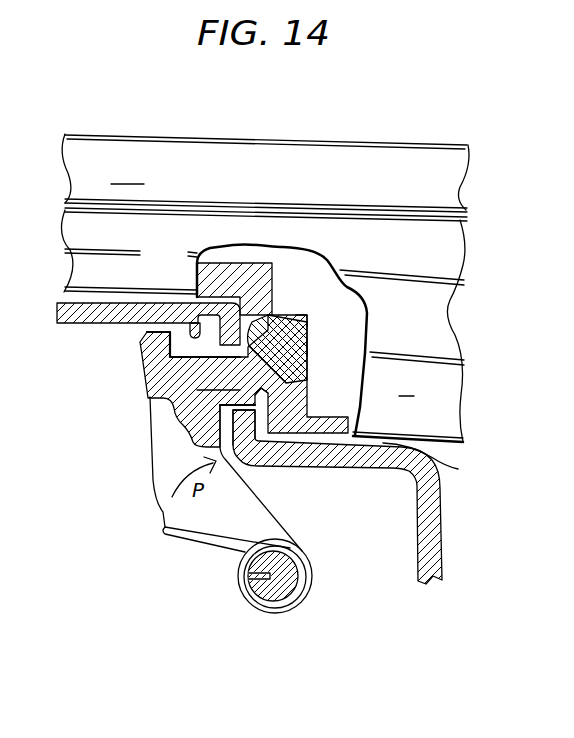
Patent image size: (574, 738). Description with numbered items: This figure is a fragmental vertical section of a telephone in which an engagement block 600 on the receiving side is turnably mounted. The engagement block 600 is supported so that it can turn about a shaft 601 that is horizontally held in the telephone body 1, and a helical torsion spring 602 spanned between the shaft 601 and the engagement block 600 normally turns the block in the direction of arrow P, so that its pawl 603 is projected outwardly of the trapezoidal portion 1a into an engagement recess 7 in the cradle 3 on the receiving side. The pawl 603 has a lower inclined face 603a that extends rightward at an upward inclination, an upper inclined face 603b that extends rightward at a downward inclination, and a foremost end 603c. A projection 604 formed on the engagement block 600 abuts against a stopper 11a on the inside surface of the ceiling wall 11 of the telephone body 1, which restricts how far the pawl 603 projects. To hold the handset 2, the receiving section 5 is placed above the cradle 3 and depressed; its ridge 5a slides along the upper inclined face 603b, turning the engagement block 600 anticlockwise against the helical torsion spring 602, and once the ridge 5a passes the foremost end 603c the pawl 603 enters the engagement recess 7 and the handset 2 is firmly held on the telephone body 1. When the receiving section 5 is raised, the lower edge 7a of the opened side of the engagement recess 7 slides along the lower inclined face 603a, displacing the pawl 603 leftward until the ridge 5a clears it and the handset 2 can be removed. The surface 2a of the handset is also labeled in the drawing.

The telephone body 1 is at (266, 396).
The trapezoidal portion 1a is at (122, 299).
The handset 2 is at (252, 135).
The outer surface of roof panel 2a is at (266, 187).
The cradle 3 is at (429, 463).
The receiving section 5 is at (402, 331).
The ridge 5a is at (282, 431).
The engagement recess 7 is at (282, 370).
The lower edge of the opened side of the engagement recess 7a is at (262, 430).
The ceiling wall 11 is at (124, 294).
The stopper 11a is at (190, 330).
The engagement block 600 is at (205, 464).
The shaft 601 is at (290, 587).
The helical torsion spring 602 is at (210, 537).
The pawl 603 is at (217, 368).
The lower inclined face 603a is at (268, 393).
The upper inclined face 603b is at (335, 310).
The foremost end 603c is at (308, 348).
The projection 604 is at (150, 337).